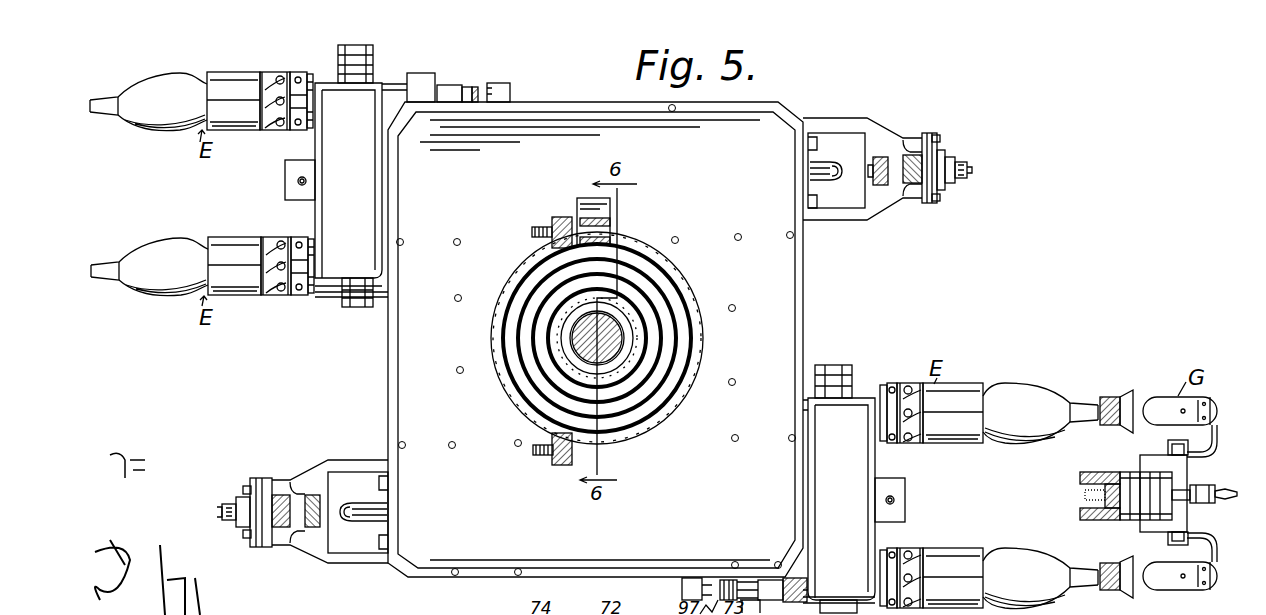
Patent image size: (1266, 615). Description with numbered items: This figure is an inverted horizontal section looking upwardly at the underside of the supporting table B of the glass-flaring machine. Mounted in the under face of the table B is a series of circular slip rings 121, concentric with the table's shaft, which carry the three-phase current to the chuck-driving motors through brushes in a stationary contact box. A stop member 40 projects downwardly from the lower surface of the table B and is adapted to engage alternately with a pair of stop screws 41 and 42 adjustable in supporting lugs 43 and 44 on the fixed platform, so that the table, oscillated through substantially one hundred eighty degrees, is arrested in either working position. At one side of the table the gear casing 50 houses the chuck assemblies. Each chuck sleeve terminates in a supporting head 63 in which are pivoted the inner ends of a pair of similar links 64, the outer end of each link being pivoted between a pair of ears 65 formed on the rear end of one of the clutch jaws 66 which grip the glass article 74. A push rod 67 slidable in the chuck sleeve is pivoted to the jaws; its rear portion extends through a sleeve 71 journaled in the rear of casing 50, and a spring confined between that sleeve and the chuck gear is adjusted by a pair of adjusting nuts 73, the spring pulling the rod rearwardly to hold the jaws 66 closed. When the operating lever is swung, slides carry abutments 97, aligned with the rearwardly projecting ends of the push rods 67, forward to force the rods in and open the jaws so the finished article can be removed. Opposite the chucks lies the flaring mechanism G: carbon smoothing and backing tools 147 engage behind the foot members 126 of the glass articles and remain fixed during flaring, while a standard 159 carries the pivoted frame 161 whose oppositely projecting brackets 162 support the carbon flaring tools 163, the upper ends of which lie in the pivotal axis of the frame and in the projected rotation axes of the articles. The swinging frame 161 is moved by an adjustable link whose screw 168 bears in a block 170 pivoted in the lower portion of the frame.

The supporting table B is at (804, 310).
The stop member 40 is at (612, 214).
The stop screw 41 is at (540, 228).
The stop screw 42 is at (542, 456).
The supporting lug 43 is at (562, 216).
The supporting lug 44 is at (562, 466).
The gear casing 50 is at (362, 98).
The supporting head 63 is at (310, 80).
The link 64 is at (282, 76).
The ear 65 is at (297, 76).
The clutch jaw 66 is at (218, 78).
The push rod 67 is at (476, 88).
The sleeve 71 is at (448, 86).
The adjusting nut 73 is at (466, 88).
The glass article 74 is at (150, 126).
The abutment 97 is at (500, 82).
The slip ring 121 is at (560, 338).
The foot member 126 is at (1126, 393).
The carbon smoothing and backing tool 147 is at (1108, 398).
The standard 159 is at (1100, 482).
The frame 161 is at (1148, 459).
The bracket 162 is at (1215, 447).
The carbon flaring tool 163 is at (1157, 398).
The screw 168 is at (1100, 498).
The block 170 is at (1212, 487).